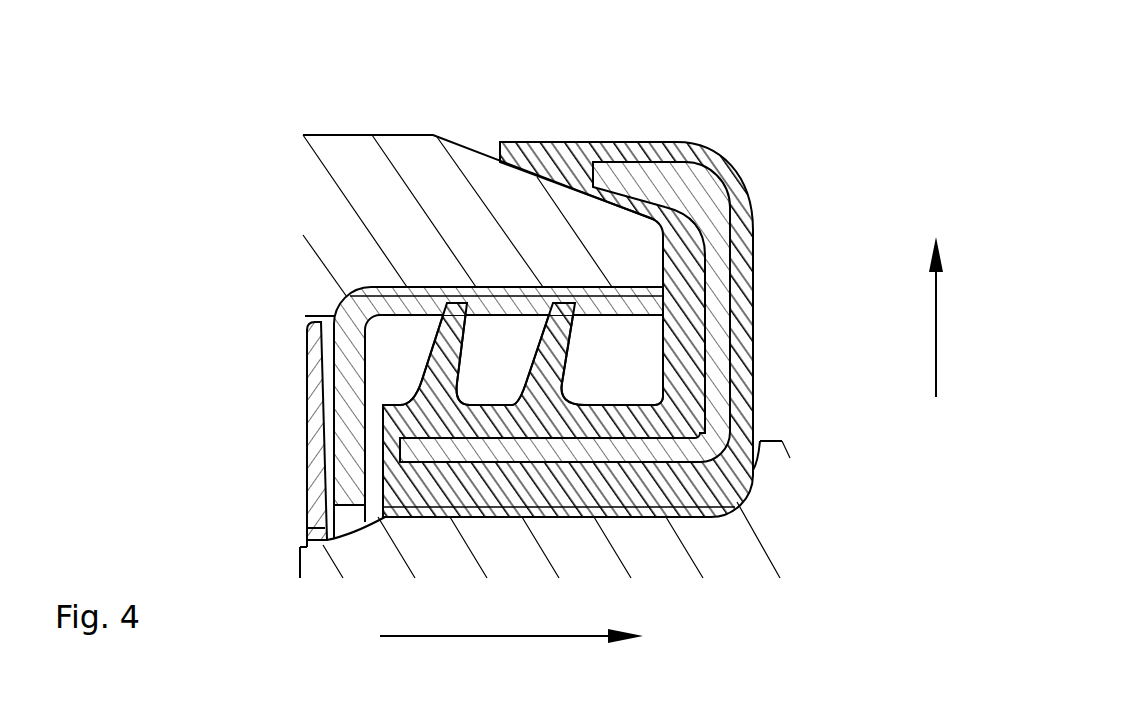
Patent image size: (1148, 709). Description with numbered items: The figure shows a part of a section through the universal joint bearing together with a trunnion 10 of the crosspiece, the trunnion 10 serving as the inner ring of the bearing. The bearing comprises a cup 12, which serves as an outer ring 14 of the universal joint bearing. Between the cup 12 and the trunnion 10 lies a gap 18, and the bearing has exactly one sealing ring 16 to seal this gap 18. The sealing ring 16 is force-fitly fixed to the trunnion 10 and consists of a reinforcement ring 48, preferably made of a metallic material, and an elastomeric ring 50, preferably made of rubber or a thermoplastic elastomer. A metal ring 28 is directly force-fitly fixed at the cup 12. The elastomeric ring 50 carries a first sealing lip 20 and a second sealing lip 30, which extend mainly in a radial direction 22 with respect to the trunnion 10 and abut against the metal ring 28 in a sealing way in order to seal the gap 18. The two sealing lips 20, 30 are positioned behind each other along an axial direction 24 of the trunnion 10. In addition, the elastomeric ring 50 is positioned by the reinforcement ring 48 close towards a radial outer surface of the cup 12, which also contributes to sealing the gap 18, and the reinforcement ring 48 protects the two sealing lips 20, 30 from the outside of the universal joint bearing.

The trunnion 10 is at (758, 589).
The cup 12 is at (475, 223).
The outer ring 14 is at (320, 215).
The sealing ring 16 is at (664, 128).
The gap 18 is at (651, 395).
The first sealing lip 20 is at (450, 348).
The radial direction 22 is at (916, 317).
The axial direction 24 is at (511, 618).
The metal ring 28 is at (405, 305).
The second sealing lip 30 is at (560, 352).
The reinforcement ring 48 is at (722, 232).
The elastomeric ring 50 is at (708, 168).